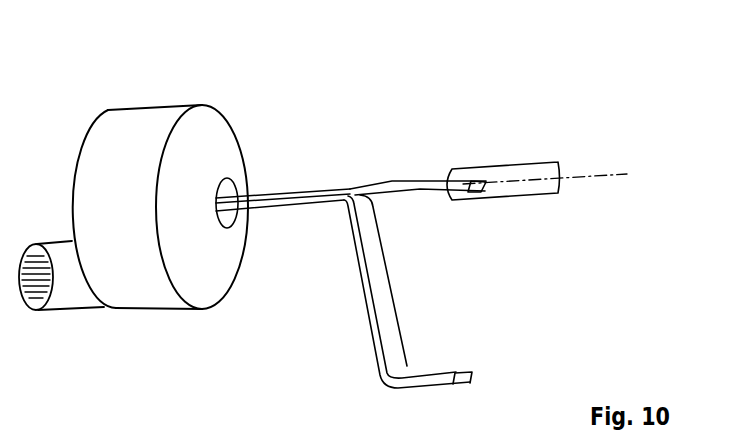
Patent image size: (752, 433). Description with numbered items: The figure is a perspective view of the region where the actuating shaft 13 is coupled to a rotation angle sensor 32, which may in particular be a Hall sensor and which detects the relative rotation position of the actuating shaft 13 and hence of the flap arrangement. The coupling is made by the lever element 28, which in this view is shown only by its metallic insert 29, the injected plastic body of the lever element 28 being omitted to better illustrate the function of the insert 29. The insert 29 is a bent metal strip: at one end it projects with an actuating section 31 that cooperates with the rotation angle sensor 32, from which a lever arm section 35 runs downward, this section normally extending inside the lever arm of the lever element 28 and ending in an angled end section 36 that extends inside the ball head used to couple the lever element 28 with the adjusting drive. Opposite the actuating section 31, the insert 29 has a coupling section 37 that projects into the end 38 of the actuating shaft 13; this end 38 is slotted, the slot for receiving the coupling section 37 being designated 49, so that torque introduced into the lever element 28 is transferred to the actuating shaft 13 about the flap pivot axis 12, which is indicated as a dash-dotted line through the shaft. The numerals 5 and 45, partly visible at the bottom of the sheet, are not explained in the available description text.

The rotation angle sensor 32 is at (152, 107).
The actuating section 31 is at (273, 192).
The lever element 28 is at (389, 209).
The coupling section 37 is at (396, 182).
The end of the actuating shaft 38 is at (457, 178).
The metallic insert 29 is at (388, 282).
The lever arm section 35 is at (352, 290).
The angled end section 36 is at (446, 370).
The slot 49 is at (448, 192).
The actuating shaft 13 is at (506, 164).
The flap pivot axis 12 is at (612, 170).
The device 5 is at (99, 422).
The component 45 is at (261, 423).